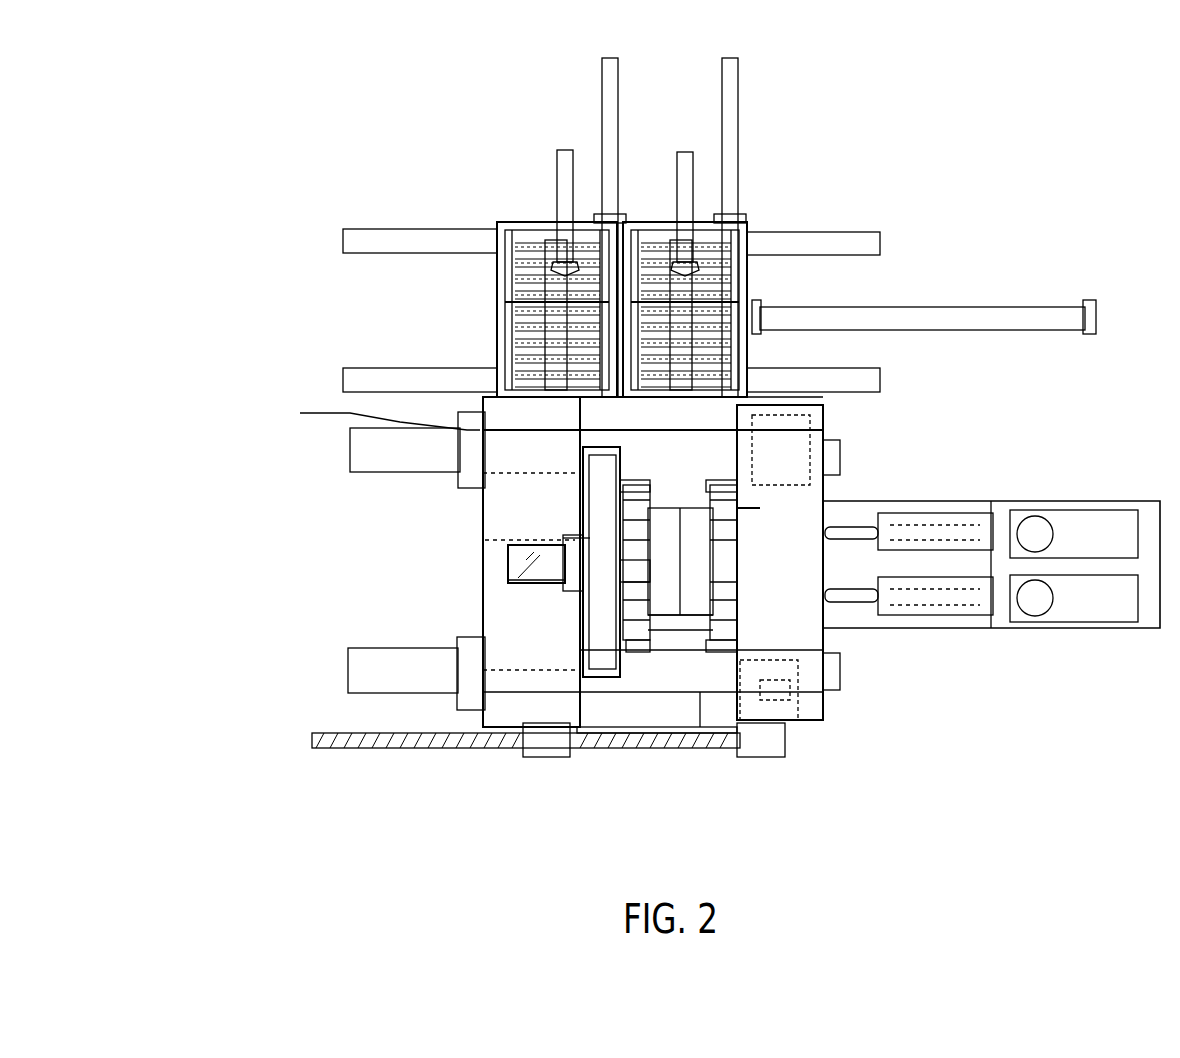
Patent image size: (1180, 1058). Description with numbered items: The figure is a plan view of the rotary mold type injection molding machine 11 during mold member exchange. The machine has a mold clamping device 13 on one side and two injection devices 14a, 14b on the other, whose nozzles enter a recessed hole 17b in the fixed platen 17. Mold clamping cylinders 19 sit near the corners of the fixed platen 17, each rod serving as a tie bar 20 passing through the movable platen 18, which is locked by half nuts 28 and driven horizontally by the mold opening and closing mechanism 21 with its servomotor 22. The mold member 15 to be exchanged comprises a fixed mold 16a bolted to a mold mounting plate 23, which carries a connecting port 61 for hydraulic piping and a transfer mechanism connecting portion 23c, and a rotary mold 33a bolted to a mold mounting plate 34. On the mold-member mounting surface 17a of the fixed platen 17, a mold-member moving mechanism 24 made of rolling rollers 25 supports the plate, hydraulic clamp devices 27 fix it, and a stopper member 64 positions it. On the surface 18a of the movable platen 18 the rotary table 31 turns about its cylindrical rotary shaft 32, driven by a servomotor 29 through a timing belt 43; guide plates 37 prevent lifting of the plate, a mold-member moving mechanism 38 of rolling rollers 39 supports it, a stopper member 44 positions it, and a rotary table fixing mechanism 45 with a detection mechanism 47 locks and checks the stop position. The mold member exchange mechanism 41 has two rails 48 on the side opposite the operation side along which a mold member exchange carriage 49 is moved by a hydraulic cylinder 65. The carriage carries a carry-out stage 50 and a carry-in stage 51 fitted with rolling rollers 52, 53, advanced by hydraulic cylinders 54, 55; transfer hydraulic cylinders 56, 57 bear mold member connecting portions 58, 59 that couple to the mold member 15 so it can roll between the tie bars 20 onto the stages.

The rotary mold type injection molding machine 11 is at (935, 195).
The mold clamping device 13 is at (305, 532).
The injection device 14a is at (1067, 515).
The injection device 14b is at (1067, 612).
The mold member 15 is at (505, 302).
The fixed mold 16a is at (700, 600).
The fixed platen 17 is at (830, 722).
The mold-member mounting surface 17a is at (727, 722).
The recessed hole 17b is at (830, 618).
The movable platen 18 is at (498, 735).
The surface of the movable platen facing the fixed platen 18a is at (670, 613).
The mold clamping cylinder 19 is at (790, 722).
The tie bar 20 is at (382, 452).
The mold opening and closing mechanism 21 is at (430, 748).
The servomotor 22 is at (757, 757).
The mold mounting plate 23 is at (717, 557).
The transfer mechanism connecting portion 23c is at (748, 500).
The mold-member moving mechanism 24 is at (823, 660).
The rolling roller 25 is at (737, 560).
The hydraulic clamp device 27 is at (737, 540).
The half nut 28 is at (383, 445).
The servomotor 29 is at (556, 568).
The rotary table 31 is at (573, 510).
The rotary shaft 32 is at (573, 538).
The rotary mold 33a is at (687, 597).
The mold mounting plate 34 is at (650, 540).
The guide plate 37 is at (742, 520).
The mold-member moving mechanism 38 is at (633, 657).
The rolling roller 39 is at (643, 607).
The mold member exchange mechanism 41 is at (392, 172).
The timing belt 43 is at (575, 488).
The stopper member 44 is at (657, 613).
The rotary table fixing mechanism 45 is at (593, 567).
The detection mechanism 47 is at (587, 583).
The rail 48 is at (370, 240).
The mold member exchange carriage 49 is at (497, 228).
The carry-out stage 50 is at (722, 212).
The carry-in stage 51 is at (520, 222).
The rolling roller 52 is at (690, 340).
The rolling roller 53 is at (545, 352).
The hydraulic cylinder 54 is at (680, 152).
The hydraulic cylinder 55 is at (560, 150).
The hydraulic cylinder 56 is at (738, 90).
The hydraulic cylinder 57 is at (602, 86).
The mold member connecting portion 58 is at (747, 272).
The mold member connecting portion 59 is at (515, 286).
The connecting port 61 is at (703, 490).
The stopper member 64 is at (723, 630).
The hydraulic cylinder 65 is at (940, 318).